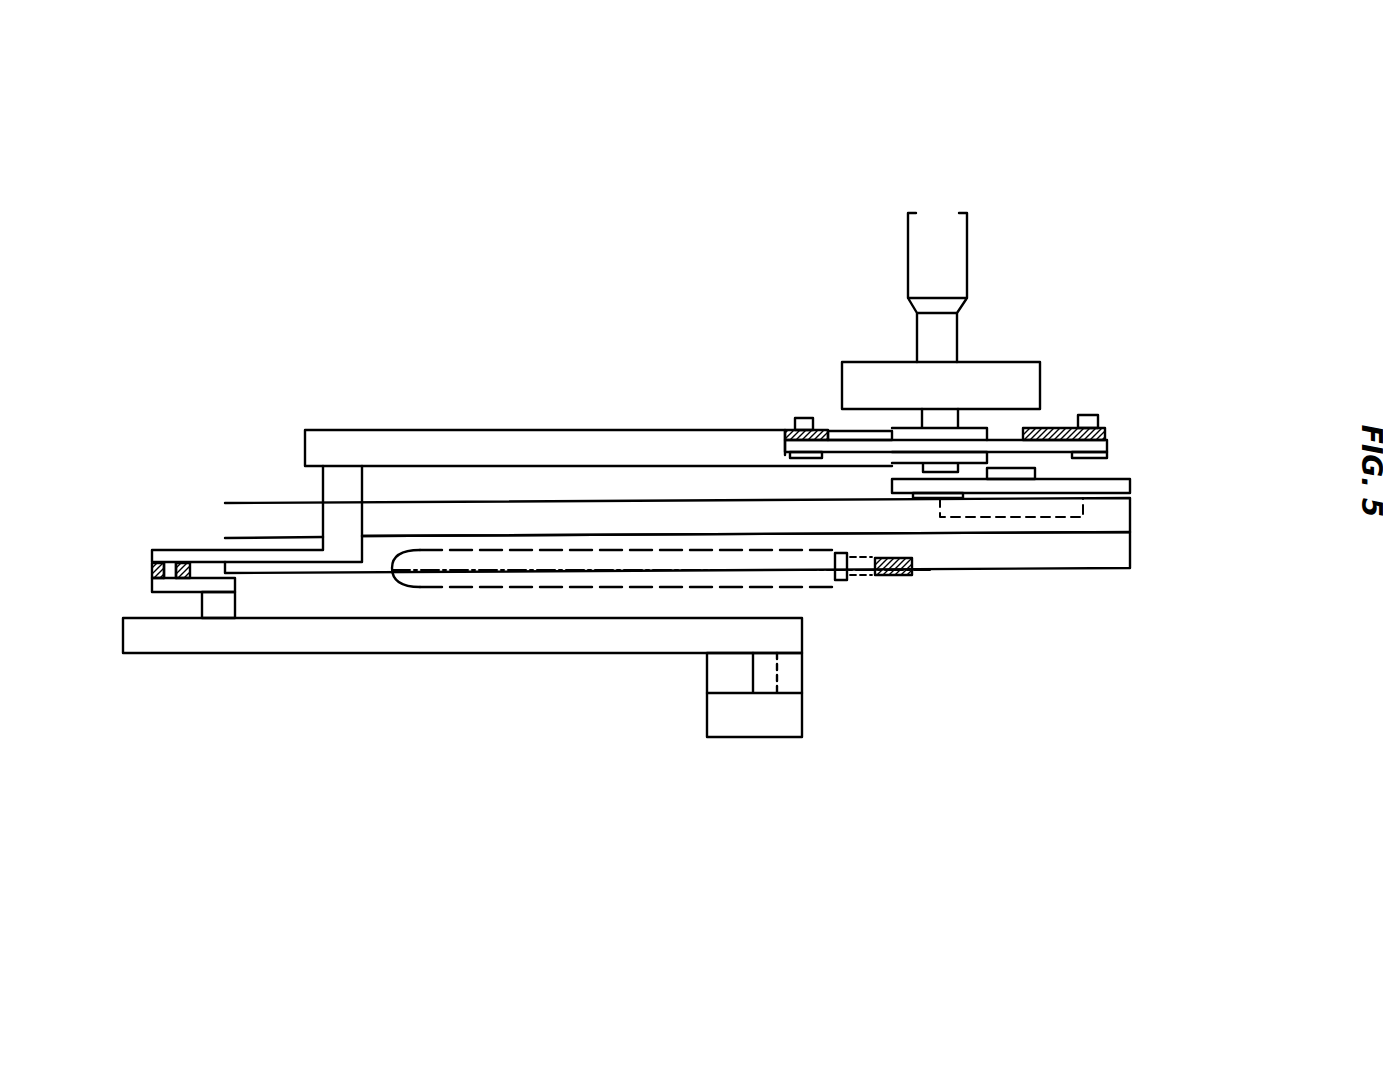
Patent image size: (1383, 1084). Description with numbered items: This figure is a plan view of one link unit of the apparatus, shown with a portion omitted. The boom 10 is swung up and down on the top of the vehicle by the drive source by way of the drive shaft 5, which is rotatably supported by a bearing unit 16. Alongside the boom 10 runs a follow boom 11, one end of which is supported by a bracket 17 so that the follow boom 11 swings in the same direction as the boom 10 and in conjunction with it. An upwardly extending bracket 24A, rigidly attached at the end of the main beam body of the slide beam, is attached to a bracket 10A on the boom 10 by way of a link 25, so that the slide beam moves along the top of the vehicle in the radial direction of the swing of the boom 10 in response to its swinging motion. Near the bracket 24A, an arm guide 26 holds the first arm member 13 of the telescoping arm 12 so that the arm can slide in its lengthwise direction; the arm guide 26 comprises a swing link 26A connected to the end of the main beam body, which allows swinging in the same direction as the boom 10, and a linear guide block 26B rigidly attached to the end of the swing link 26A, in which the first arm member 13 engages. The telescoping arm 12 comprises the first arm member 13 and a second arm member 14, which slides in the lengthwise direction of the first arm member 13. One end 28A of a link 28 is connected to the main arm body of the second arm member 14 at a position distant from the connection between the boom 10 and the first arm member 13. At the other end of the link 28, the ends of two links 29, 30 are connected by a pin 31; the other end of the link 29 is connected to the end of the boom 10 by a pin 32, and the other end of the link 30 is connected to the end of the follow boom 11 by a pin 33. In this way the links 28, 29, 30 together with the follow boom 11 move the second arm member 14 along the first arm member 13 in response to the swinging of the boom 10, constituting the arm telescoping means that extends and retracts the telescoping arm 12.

The drive shaft 5 is at (968, 242).
The bearing unit 16 is at (1018, 362).
The boom 10 is at (510, 430).
The bracket 10A is at (790, 428).
The link 25 is at (1110, 446).
The bracket 24A is at (1098, 420).
The arm guide 26 is at (1011, 594).
The swing link 26A is at (1052, 483).
The linear guide block 26B is at (1015, 517).
The telescoping arm 12 is at (750, 537).
The first arm member 13 is at (1132, 514).
The second arm member 14 is at (1132, 560).
The pin 32 is at (343, 466).
The link 29 is at (152, 553).
The pin 31 is at (172, 578).
The link 30 is at (152, 587).
The pin 33 is at (217, 618).
The follow boom 11 is at (472, 655).
The bracket 17 is at (760, 737).
The link 28 is at (592, 590).
The one end of link 28A is at (890, 580).